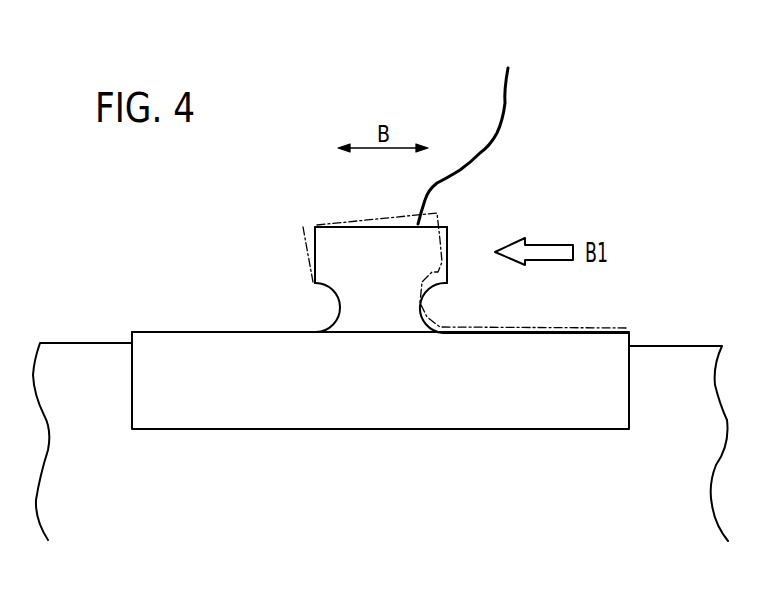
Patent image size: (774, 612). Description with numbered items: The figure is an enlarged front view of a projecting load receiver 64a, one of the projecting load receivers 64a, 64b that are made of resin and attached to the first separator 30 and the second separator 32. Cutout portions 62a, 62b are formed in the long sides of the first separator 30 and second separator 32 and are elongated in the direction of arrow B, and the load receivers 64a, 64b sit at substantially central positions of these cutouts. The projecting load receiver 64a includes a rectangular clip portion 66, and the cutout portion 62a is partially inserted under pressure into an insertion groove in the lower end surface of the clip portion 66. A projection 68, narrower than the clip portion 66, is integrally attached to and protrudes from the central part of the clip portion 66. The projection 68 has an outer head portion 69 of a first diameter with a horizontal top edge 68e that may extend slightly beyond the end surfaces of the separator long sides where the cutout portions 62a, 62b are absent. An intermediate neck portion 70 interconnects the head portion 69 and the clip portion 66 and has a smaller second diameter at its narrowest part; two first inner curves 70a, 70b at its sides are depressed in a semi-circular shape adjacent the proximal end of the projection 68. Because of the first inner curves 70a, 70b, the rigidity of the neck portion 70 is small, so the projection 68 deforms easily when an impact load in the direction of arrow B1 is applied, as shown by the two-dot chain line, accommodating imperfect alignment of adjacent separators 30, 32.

The first separator 30 is at (78, 410).
The second separator 32 is at (97, 339).
The cutout portion 62a is at (683, 409).
The cutout portion 62b is at (658, 343).
The projecting load receiver 64a is at (380, 184).
The projecting load receiver 64b is at (380, 184).
The clip portion 66 is at (403, 417).
The projection 68 is at (303, 227).
The horizontal top edge 68e is at (475, 129).
The outer portion (head) 69 is at (315, 256).
The intermediate neck portion 70 is at (438, 280).
The first inner curve 70a is at (338, 304).
The first inner curve 70b is at (425, 318).